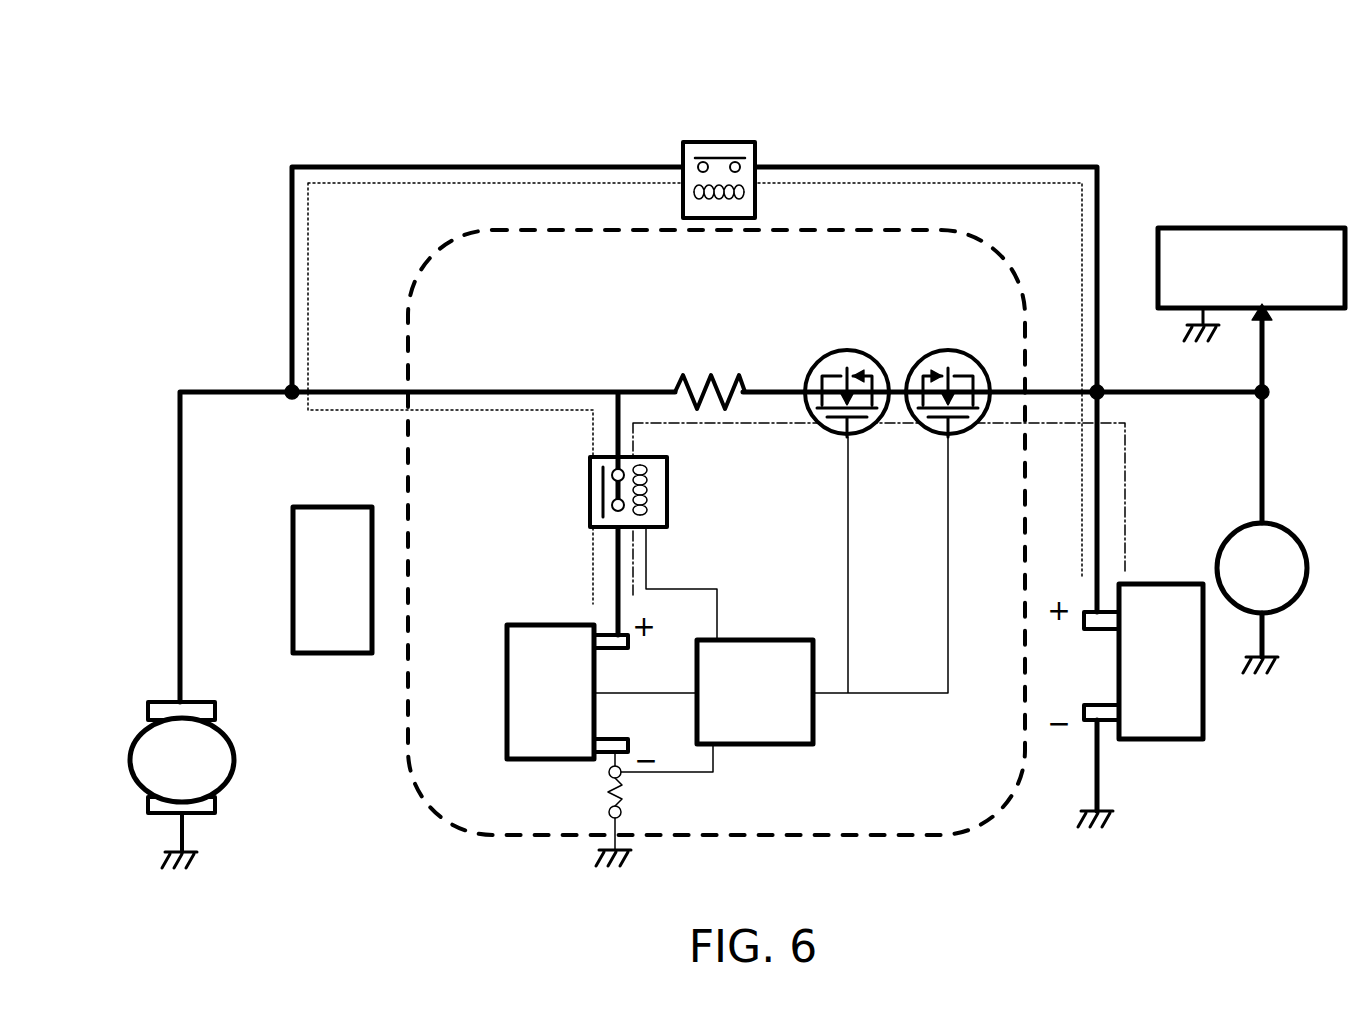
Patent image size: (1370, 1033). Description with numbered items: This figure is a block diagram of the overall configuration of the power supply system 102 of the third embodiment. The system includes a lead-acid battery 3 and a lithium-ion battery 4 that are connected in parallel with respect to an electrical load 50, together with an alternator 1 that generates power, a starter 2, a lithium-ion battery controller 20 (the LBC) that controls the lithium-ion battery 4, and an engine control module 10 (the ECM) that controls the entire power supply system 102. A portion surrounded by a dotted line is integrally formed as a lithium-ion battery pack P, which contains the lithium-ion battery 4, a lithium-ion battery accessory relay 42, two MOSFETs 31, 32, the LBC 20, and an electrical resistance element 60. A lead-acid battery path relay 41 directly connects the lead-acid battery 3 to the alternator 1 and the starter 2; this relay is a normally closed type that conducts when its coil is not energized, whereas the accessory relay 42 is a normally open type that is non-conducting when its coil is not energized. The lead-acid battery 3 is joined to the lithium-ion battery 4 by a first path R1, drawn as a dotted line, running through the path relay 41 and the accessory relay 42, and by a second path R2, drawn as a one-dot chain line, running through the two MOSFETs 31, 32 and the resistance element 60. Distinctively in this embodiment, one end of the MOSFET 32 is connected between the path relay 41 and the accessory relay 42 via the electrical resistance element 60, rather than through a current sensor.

The power supply system 102 is at (1163, 103).
The lithium-ion battery pack P is at (966, 830).
The first path R1 is at (965, 180).
The second path R2 is at (1140, 465).
The lead-acid battery path relay 41 is at (755, 160).
The lithium-ion battery accessory relay 42 is at (667, 488).
The electrical load 50 is at (1252, 228).
The electrical resistance element 60 is at (730, 380).
The MOSFET 31 is at (945, 350).
The MOSFET 32 is at (850, 350).
The engine control module 10 is at (335, 507).
The lithium-ion battery 4 is at (537, 625).
The lithium-ion battery controller 20 is at (792, 745).
The lead-acid battery 3 is at (1150, 584).
The alternator 1 is at (1296, 603).
The starter 2 is at (140, 740).